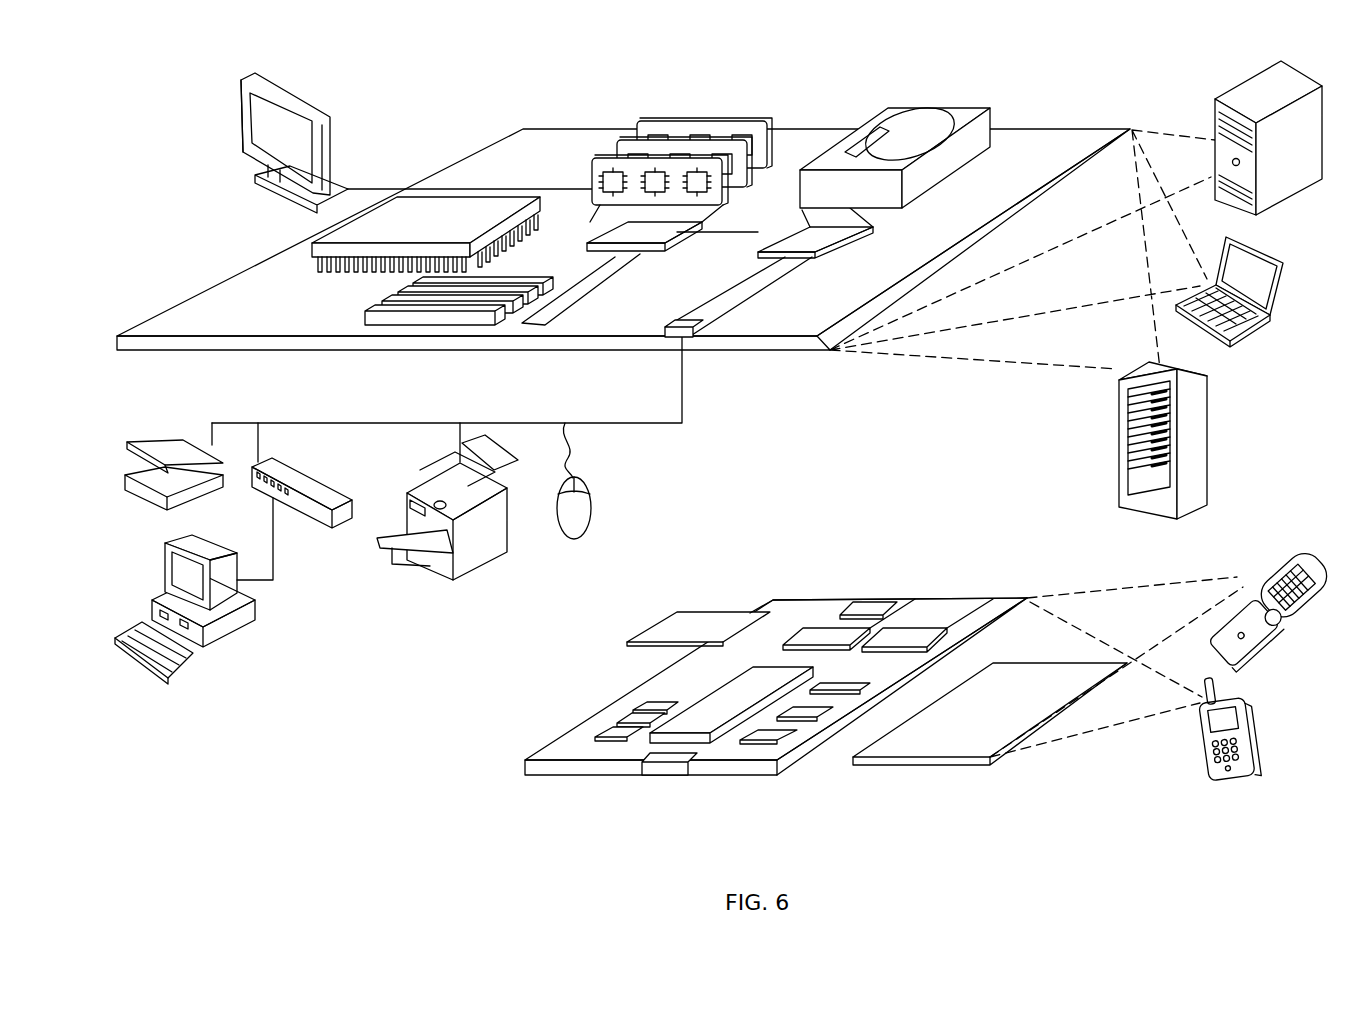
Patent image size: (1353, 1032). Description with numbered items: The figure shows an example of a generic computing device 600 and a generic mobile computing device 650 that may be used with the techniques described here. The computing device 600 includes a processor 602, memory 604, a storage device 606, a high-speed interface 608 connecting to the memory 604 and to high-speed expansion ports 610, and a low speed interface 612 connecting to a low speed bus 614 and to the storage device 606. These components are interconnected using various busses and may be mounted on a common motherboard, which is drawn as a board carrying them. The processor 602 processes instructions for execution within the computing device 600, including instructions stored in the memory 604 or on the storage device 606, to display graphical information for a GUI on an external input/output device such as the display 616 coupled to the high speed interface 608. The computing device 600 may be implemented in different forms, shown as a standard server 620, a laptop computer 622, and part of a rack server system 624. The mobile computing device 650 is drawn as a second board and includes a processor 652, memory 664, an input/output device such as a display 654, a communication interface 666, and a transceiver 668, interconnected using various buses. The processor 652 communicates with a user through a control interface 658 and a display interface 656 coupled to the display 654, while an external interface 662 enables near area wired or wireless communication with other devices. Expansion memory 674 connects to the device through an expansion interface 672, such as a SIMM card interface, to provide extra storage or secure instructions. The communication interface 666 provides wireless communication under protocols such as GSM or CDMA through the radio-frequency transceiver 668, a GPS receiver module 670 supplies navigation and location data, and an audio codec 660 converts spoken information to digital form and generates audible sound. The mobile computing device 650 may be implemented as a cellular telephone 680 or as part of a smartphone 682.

The computing device 600 is at (445, 106).
The processor 602 is at (314, 249).
The memory 604 is at (640, 158).
The storage device 606 is at (884, 110).
The high-speed interface 608 is at (622, 236).
The high-speed expansion ports 610 is at (385, 308).
The low speed interface 612 is at (797, 233).
The low speed bus 614 is at (692, 338).
The display 616 is at (248, 78).
The standard server 620 is at (1215, 112).
The laptop computer 622 is at (1278, 262).
The rack server system 624 is at (1119, 464).
The mobile computing device 650 is at (500, 769).
The processor 652 is at (707, 735).
The display 654 is at (948, 753).
The display interface 656 is at (781, 746).
The control interface 658 is at (827, 722).
The audio codec 660 is at (834, 696).
The external interface 662 is at (667, 762).
The memory 664 is at (612, 717).
The communication interface 666 is at (828, 642).
The transceiver 668 is at (905, 640).
The GPS receiver module 670 is at (878, 614).
The expansion interface 672 is at (746, 612).
The expansion memory 674 is at (672, 612).
The cellular telephone 680 is at (1262, 562).
The smartphone 682 is at (1203, 736).